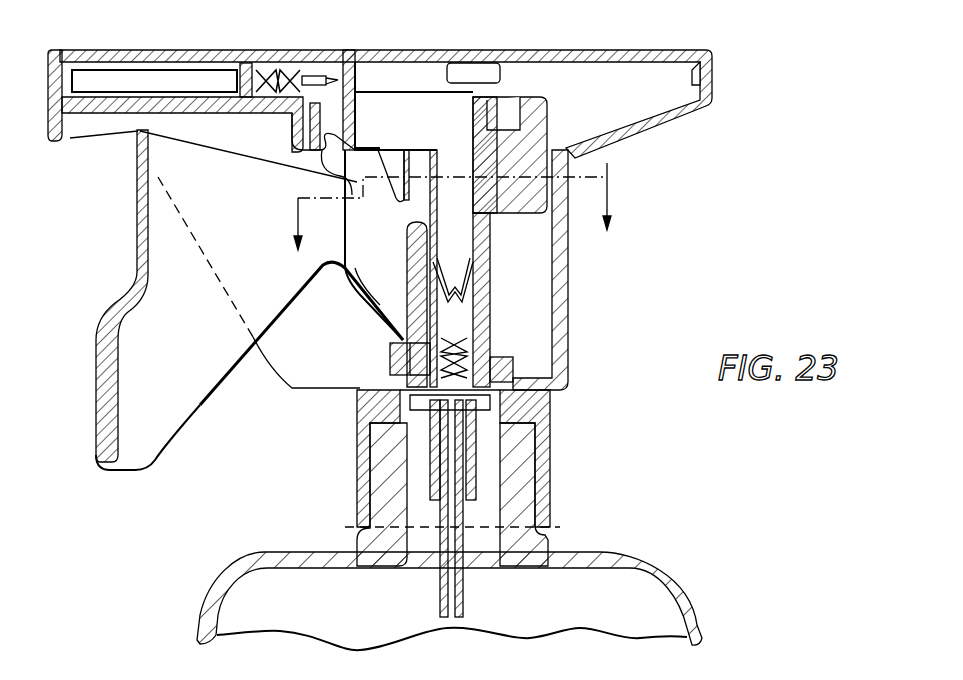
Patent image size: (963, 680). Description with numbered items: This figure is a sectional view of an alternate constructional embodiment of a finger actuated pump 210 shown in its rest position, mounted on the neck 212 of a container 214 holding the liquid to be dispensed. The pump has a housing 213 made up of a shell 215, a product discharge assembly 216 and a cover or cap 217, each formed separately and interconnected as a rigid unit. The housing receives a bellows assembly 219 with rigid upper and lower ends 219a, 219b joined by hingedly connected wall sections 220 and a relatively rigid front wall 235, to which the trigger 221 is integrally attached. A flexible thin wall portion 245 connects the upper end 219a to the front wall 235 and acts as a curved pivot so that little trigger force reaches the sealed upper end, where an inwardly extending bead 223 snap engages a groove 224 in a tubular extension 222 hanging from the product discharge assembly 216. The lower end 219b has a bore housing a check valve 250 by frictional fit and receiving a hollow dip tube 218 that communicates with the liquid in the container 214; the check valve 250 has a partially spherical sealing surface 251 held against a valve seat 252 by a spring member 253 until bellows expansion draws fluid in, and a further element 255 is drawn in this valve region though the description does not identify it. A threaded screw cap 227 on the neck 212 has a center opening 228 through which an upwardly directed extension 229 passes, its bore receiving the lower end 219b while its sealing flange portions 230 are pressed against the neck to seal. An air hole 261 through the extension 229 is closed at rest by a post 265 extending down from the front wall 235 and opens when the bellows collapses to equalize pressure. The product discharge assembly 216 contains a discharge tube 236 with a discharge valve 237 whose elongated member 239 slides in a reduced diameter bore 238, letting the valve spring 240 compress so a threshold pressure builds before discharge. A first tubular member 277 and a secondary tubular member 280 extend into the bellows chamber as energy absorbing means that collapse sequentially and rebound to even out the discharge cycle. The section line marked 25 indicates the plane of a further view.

The finger actuated pump 210 is at (725, 80).
The neck 212 is at (585, 562).
The housing 213 is at (660, 46).
The container 214 is at (700, 622).
The shell 215 is at (672, 128).
The product discharge assembly 216 is at (207, 50).
The cover or cap 217 is at (560, 50).
The dip tube 218 is at (470, 602).
The bellows assembly 219 is at (368, 322).
The upper end of bellows 219a is at (497, 112).
The lower end of bellows 219b is at (430, 477).
The hingedly connected wall sections 220 is at (362, 300).
The trigger 221 is at (110, 330).
The tubular extension 222 is at (478, 112).
The inwardly extending bead 223 is at (478, 143).
The groove 224 is at (340, 148).
The threaded screw cap 227 is at (540, 440).
The center opening 228 is at (358, 440).
The extension 229 is at (507, 372).
The sealing flange portions 230 is at (528, 418).
The front wall 235 is at (340, 235).
The discharge tube 236 is at (100, 113).
The discharge valve 237 is at (262, 70).
The reduced diameter bore 238 is at (355, 82).
The elongated member 239 is at (340, 70).
The valve spring 240 is at (284, 70).
The flexible thin wall portion 245 is at (330, 168).
The section line 25- 25 is at (455, 210).
The check valve 250 is at (482, 366).
The sealing surface 251 is at (380, 445).
The valve seat 252 is at (493, 423).
The spring member 253 is at (455, 322).
The valve spring 255 is at (462, 347).
The air hole 261 is at (370, 392).
The post 265 is at (395, 346).
The first tubular member 277 is at (490, 213).
The secondary tubular member 280 is at (396, 182).